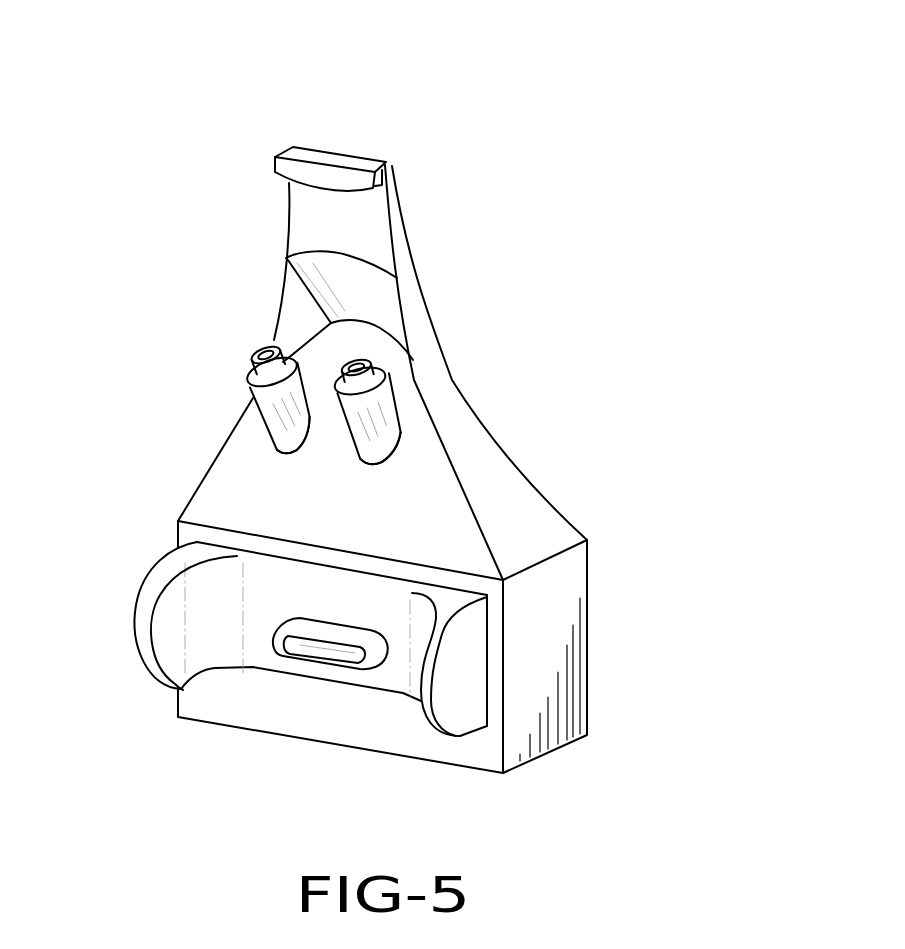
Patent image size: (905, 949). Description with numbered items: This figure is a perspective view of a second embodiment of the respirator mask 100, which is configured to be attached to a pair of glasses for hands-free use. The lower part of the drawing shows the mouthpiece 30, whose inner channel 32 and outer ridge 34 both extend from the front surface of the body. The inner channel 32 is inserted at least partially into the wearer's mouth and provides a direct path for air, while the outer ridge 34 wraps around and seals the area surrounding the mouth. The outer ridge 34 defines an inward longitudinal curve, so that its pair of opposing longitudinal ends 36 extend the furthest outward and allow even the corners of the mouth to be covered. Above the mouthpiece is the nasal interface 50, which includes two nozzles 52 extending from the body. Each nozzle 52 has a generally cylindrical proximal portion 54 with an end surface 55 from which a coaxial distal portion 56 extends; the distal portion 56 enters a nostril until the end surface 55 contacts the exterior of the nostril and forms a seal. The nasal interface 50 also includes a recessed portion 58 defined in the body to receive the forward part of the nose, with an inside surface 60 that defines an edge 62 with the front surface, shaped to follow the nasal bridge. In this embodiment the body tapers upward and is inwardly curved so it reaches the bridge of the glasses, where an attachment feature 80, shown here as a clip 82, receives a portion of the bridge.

The respirator mask 100 is at (208, 118).
The mouthpiece 30 is at (256, 690).
The inner channel 32 is at (332, 664).
The outer ridge 34 is at (231, 548).
The longitudinal ends 36 is at (135, 604).
The nasal interface 50 is at (460, 287).
The nozzle 52 is at (311, 432).
The proximal portion 54 is at (265, 412).
The end surface 55 is at (250, 378).
The distal portion 56 is at (263, 347).
The recessed portion 58 is at (263, 279).
The inside surface 60 is at (358, 293).
The edge 62 is at (391, 274).
The attachment feature 80 is at (394, 197).
The clip 82 is at (387, 165).